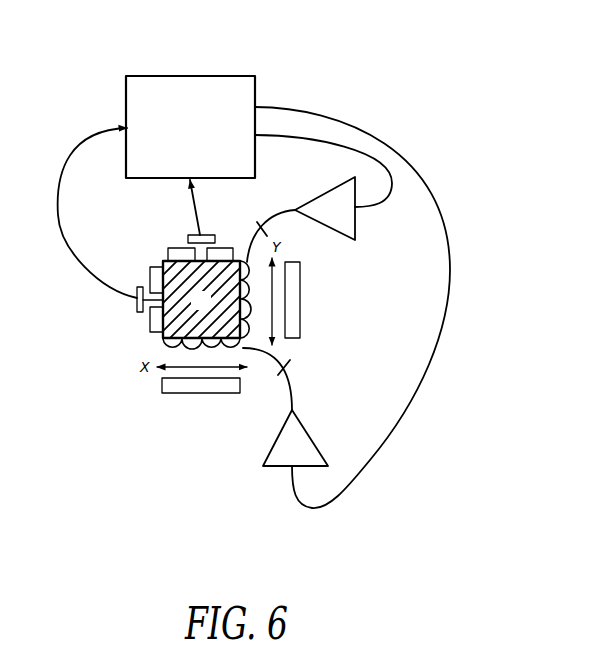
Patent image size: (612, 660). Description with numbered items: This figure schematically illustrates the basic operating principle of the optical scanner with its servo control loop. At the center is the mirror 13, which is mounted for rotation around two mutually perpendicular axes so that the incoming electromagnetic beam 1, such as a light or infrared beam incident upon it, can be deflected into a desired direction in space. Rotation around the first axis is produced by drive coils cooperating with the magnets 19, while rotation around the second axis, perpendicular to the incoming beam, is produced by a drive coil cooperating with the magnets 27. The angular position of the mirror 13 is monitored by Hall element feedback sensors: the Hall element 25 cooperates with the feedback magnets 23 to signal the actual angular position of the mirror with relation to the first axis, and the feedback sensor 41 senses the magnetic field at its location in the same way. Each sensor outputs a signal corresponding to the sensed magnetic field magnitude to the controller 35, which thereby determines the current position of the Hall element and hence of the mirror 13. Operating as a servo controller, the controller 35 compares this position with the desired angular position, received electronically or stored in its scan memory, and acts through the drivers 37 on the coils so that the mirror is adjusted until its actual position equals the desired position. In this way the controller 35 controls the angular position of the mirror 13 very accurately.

The incoming electromagnetic beam 1 is at (201, 299).
The mirror 13 is at (147, 340).
The magnets 19 is at (190, 396).
The feedback magnets 23 is at (160, 248).
The Hall element 25 is at (215, 236).
The magnets 27 is at (304, 305).
The controller 35 is at (190, 74).
The drivers 37 is at (330, 184).
The feedback sensor 41 is at (133, 307).